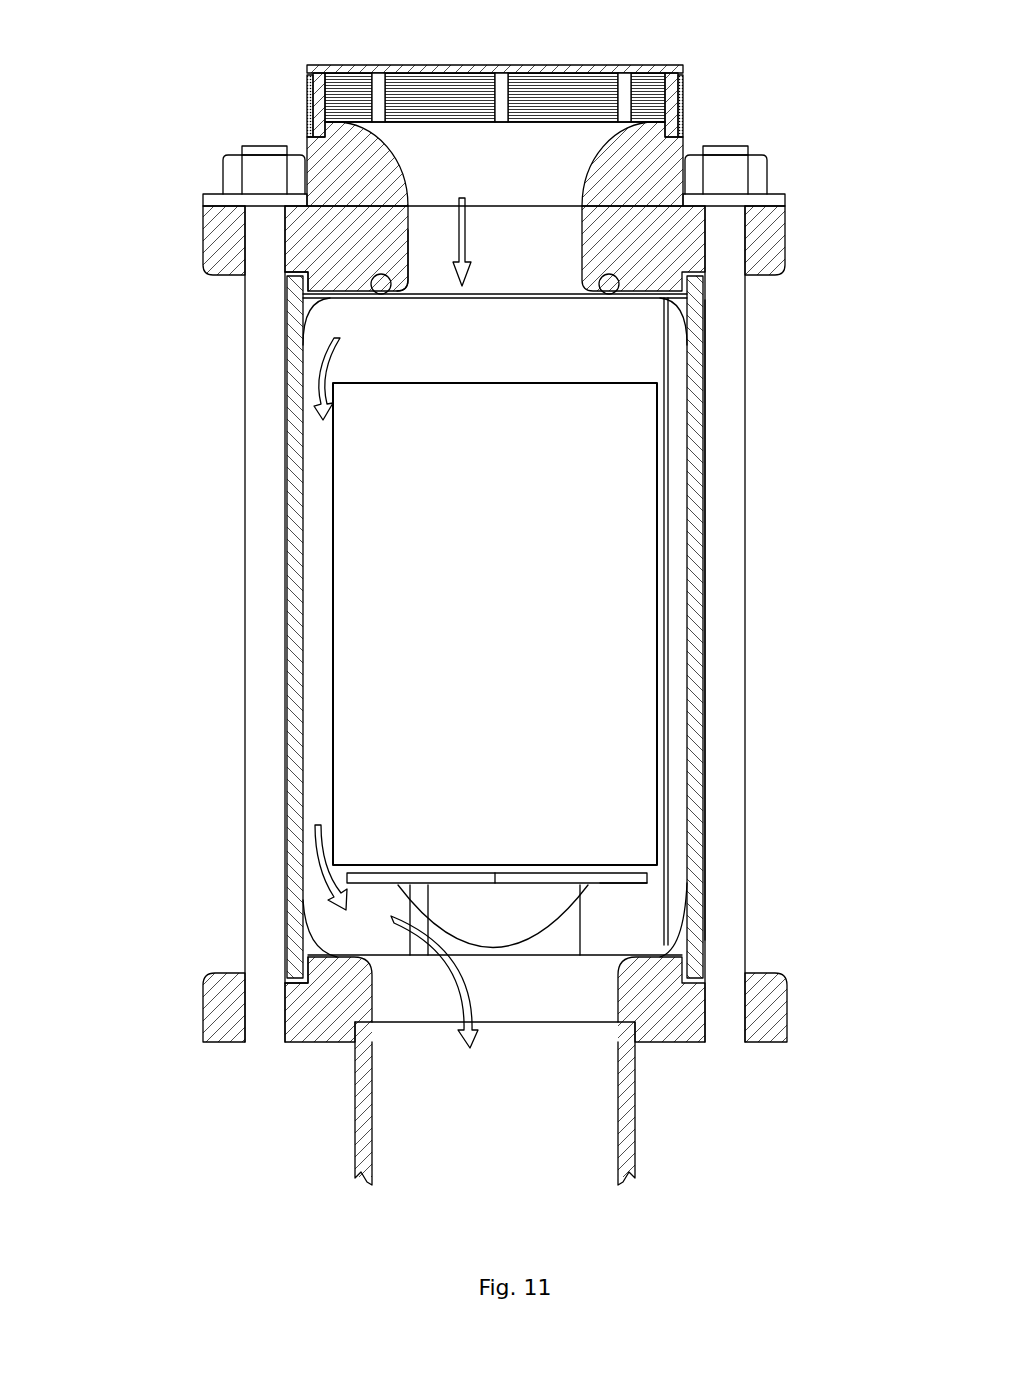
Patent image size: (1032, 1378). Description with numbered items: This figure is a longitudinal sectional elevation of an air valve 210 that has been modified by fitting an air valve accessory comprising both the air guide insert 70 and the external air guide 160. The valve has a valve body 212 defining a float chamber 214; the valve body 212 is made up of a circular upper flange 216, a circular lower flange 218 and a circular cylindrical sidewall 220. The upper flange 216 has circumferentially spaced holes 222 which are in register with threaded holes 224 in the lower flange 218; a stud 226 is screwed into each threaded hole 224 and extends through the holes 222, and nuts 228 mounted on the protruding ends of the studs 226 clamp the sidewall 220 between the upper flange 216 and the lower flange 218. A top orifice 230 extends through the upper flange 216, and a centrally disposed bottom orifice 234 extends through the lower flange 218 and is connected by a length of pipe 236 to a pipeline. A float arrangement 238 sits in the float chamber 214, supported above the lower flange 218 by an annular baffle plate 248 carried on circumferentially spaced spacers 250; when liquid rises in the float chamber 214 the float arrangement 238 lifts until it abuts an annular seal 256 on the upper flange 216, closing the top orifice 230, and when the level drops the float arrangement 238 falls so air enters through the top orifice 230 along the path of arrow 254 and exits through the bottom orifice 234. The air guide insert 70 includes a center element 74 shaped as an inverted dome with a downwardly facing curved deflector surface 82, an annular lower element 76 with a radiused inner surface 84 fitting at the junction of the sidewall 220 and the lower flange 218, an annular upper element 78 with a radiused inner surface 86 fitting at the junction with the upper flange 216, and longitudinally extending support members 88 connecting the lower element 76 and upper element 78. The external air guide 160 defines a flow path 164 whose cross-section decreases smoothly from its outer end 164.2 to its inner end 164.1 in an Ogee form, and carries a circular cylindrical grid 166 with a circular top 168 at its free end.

The air valve 210 is at (472, 597).
The external air guide 160 is at (460, 139).
The circular top 168 is at (385, 65).
The flow path 164 is at (551, 132).
The inner end diameter 164.1 is at (549, 210).
The outer end diameter 164.2 is at (447, 123).
The circular cylindrical grid 166 is at (681, 102).
The nuts 228 is at (233, 170).
The arrow 254 is at (457, 212).
The top orifice 230 is at (494, 240).
The holes 222 is at (292, 227).
The annular upper element 78 is at (410, 228).
The upper flange 216 is at (788, 240).
The annular seal 256 is at (606, 294).
The radiused inner surface 86 is at (325, 322).
The air guide insert 70 is at (706, 364).
The valve body 212 is at (516, 640).
The float arrangement 238 is at (657, 440).
The elongate support members 88 is at (303, 515).
The sidewall 220 is at (705, 573).
The studs 226 is at (245, 640).
The float chamber 214 is at (658, 884).
The radiused inner surface 84 is at (318, 926).
The center element 74 is at (520, 906).
The annular baffle plate 248 is at (357, 883).
The spacers 250 is at (580, 912).
The deflector surface 82 is at (532, 940).
The threaded holes 224 is at (241, 999).
The lower flange 218 is at (203, 1012).
The annular lower element 76 is at (283, 985).
The bottom orifice 234 is at (429, 997).
The pipe 236 is at (637, 1122).